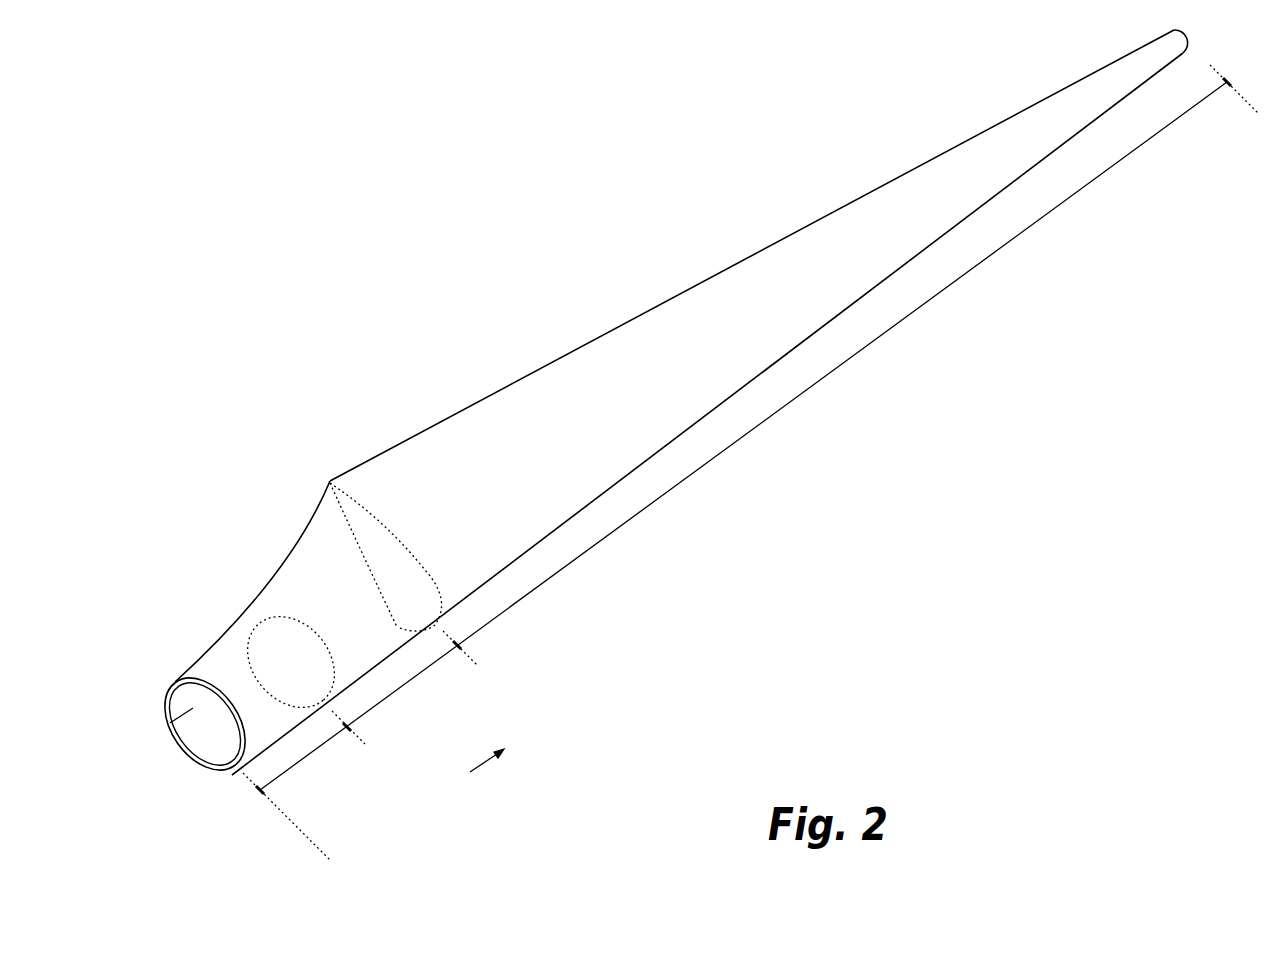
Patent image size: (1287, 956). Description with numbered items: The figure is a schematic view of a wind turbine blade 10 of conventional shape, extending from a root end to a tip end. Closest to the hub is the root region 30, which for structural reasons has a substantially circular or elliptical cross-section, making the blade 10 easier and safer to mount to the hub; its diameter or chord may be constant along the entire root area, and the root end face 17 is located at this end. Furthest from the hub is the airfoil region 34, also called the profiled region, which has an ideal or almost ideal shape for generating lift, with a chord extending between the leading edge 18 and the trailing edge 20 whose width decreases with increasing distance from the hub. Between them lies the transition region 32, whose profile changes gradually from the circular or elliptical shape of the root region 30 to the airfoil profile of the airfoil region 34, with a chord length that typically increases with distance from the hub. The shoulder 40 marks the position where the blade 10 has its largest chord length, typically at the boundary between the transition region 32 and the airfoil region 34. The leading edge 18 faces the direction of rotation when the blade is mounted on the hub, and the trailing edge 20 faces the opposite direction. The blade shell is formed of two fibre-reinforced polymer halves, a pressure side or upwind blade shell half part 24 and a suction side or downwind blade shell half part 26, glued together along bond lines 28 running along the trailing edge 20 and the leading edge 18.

The wind turbine blade 10 is at (496, 262).
The root end face 17 is at (170, 723).
The leading edge 18 is at (877, 285).
The trailing edge 20 is at (742, 261).
The pressure side blade shell half part 24 is at (198, 675).
The suction side blade shell half part 26 is at (203, 767).
The bond lines 28 is at (186, 678).
The root region 30 is at (303, 758).
The transition region 32 is at (405, 683).
The airfoil region 34 is at (763, 421).
The shoulder 40 is at (334, 492).